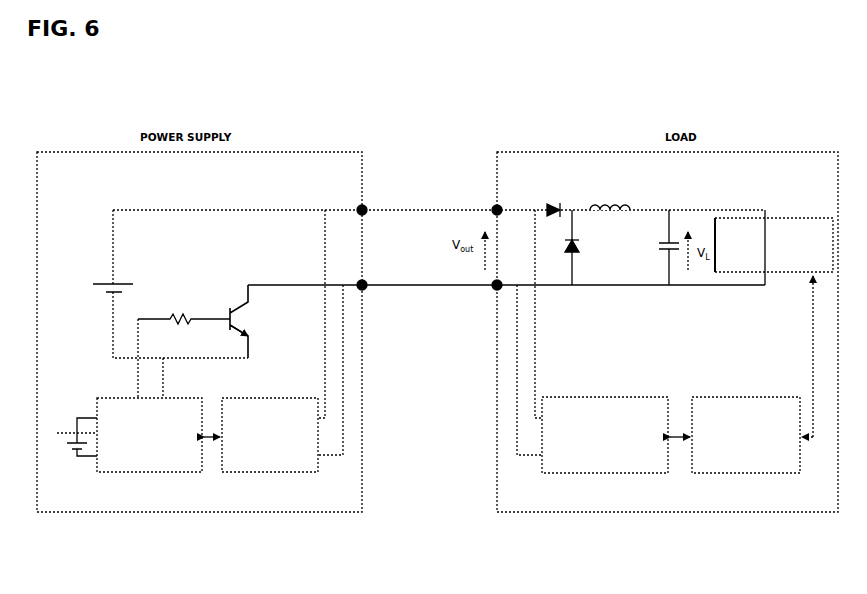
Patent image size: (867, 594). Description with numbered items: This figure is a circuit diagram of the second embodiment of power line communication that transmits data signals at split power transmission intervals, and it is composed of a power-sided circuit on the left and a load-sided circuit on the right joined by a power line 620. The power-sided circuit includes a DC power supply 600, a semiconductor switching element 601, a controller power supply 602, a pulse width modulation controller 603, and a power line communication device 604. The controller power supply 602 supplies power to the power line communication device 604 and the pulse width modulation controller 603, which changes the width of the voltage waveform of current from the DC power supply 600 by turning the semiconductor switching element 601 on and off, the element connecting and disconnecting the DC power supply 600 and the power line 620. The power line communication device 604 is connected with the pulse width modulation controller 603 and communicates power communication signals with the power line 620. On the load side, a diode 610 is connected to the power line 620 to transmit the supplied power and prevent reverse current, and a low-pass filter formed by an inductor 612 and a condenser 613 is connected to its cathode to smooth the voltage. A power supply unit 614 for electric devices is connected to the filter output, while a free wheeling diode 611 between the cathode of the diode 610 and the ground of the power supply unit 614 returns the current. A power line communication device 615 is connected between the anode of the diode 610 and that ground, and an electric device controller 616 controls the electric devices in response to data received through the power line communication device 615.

The DC power supply 600 is at (70, 224).
The semiconductor switching element 601 is at (228, 302).
The controller power supply 602 is at (71, 478).
The pulse width modulation controller 603 is at (150, 480).
The power line communication device 604 is at (272, 482).
The diode 610 is at (540, 198).
The free wheeling diode 611 is at (565, 257).
The inductor 612 is at (607, 198).
The condenser 613 is at (672, 262).
The power supply unit for electric devices 614 is at (776, 214).
The power line communication device 615 is at (593, 482).
The electric device controller 616 is at (708, 482).
The power line 620 is at (386, 203).